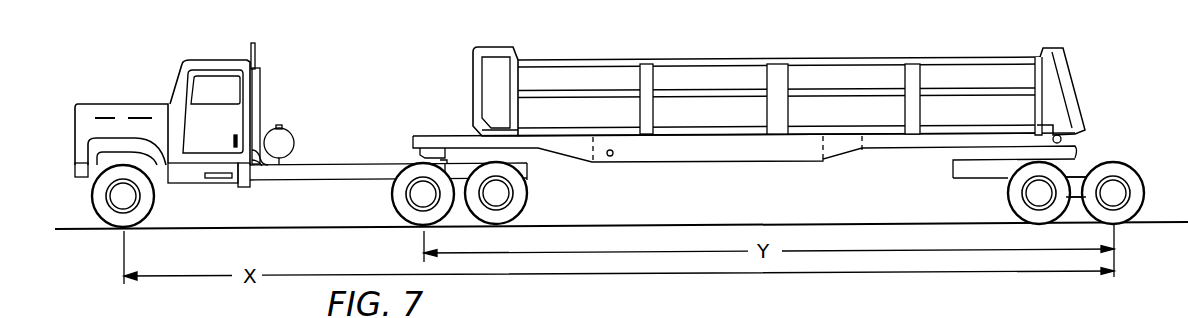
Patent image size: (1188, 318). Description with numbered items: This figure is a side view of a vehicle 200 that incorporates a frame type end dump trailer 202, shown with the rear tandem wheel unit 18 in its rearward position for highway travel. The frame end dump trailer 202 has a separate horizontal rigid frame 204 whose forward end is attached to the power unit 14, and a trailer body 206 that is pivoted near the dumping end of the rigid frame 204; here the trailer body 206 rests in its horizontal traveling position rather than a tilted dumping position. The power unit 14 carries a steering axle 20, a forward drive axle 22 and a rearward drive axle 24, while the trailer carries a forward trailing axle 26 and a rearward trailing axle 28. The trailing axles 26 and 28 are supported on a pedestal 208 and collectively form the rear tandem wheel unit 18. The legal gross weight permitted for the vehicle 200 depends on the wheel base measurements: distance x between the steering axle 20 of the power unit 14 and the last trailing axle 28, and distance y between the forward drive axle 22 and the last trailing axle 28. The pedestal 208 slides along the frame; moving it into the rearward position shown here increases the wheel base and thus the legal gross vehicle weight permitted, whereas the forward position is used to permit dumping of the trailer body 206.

The power unit 14 is at (150, 102).
The rear tandem wheel unit 18 is at (1154, 200).
The steering axle 20 is at (131, 202).
The forward drive axle 22 is at (420, 194).
The rearward drive axle 24 is at (503, 198).
The forward trailing axle 26 is at (1032, 191).
The rearward trailing axle 28 is at (1119, 186).
The vehicle 200 is at (729, 108).
The frame end dump trailer 202 is at (837, 57).
The rigid frame 204 is at (707, 153).
The trailer body 206 is at (582, 59).
The pedestal 208 is at (1080, 164).